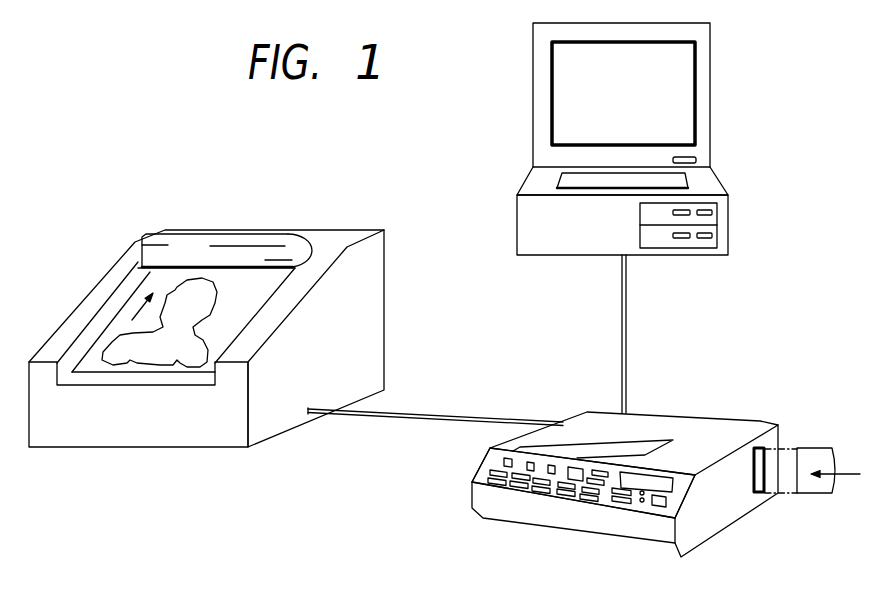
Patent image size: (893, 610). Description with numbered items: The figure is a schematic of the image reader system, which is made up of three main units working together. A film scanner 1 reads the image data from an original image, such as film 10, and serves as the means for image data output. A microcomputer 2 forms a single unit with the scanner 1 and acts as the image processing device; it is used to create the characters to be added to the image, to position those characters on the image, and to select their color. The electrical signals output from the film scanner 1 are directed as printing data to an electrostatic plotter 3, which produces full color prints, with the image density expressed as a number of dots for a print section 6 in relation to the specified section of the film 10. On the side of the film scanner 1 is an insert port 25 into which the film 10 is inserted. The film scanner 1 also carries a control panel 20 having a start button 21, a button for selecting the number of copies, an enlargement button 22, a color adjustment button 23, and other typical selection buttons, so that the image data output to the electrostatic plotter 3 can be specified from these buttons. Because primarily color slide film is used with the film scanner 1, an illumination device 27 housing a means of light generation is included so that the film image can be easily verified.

The film scanner 1 is at (631, 463).
The microcomputer 2 is at (524, 88).
The electrostatic plotter 3 is at (220, 308).
The print section 6 is at (193, 287).
The film 10 is at (815, 458).
The control panel 20 is at (601, 522).
The start button 21 is at (665, 498).
The enlargement button 22 is at (563, 487).
The color adjustment button 23 is at (517, 485).
The insert port 25 is at (768, 491).
The illumination device 27 is at (645, 442).